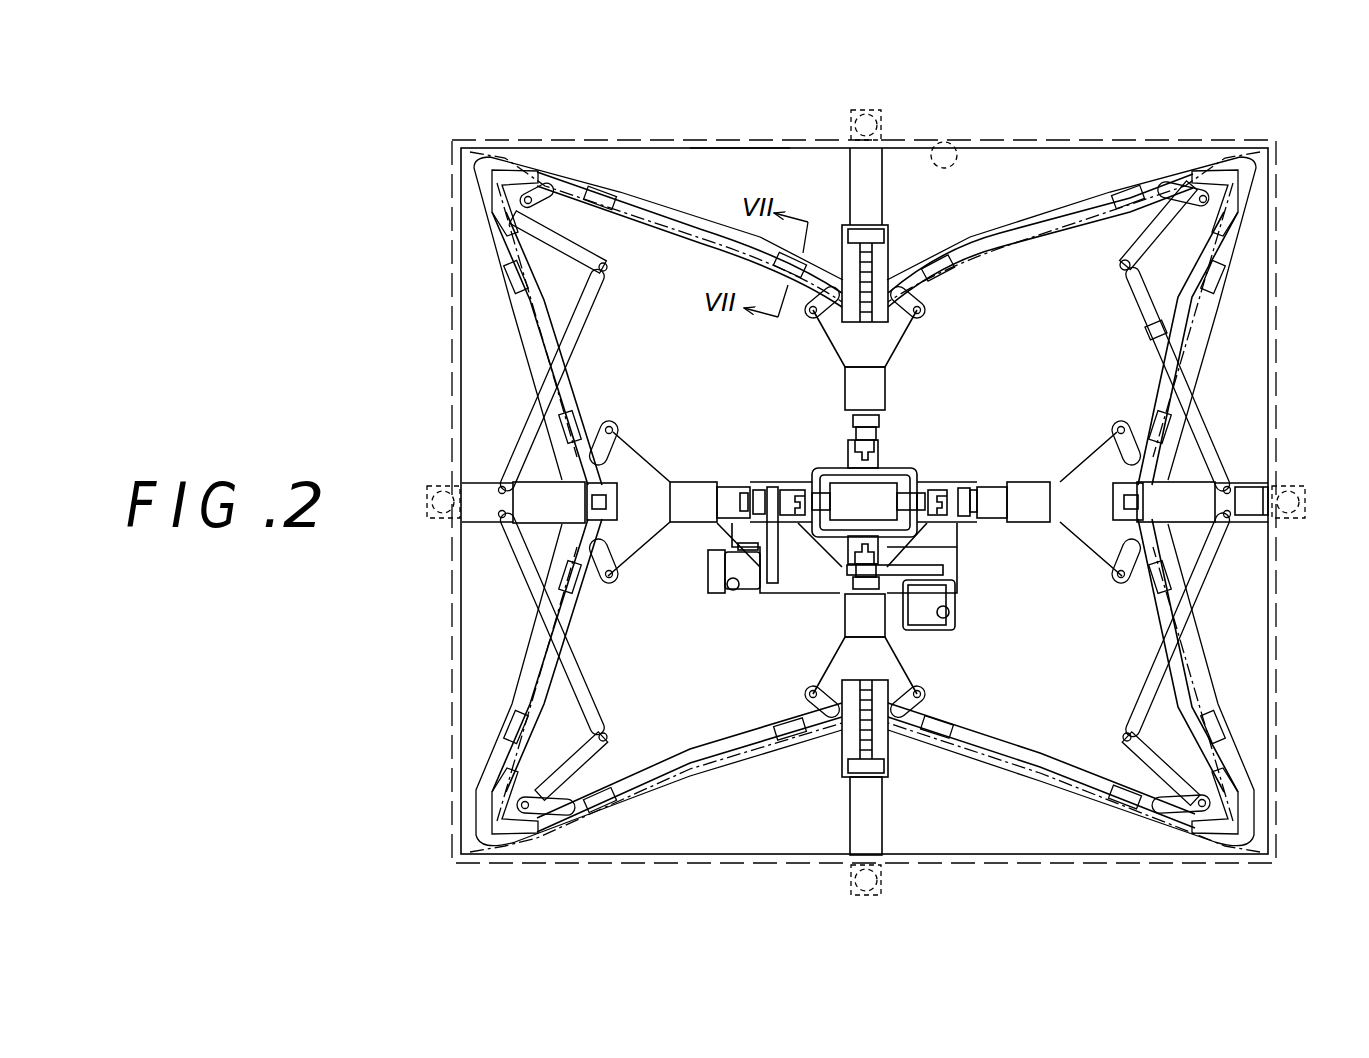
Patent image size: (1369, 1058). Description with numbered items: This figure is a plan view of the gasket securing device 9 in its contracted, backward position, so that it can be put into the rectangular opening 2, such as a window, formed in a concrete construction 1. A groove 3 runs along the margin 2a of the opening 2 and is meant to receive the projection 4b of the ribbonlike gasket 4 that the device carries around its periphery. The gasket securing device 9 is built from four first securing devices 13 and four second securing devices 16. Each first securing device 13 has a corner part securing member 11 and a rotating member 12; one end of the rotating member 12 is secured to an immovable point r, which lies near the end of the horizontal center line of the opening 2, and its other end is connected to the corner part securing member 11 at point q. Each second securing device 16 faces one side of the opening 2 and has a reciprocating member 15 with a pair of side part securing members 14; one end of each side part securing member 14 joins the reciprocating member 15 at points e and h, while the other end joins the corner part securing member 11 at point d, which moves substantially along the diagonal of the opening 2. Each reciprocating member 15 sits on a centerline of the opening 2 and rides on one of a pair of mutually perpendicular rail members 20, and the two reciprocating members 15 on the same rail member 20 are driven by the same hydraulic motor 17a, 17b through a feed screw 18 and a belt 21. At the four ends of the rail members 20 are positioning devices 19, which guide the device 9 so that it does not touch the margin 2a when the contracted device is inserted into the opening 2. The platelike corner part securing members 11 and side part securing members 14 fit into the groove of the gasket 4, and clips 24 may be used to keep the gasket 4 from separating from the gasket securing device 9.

The concrete construction 1 is at (1258, 121).
The opening 2 is at (1018, 160).
The margin of the opening 2a is at (712, 150).
The groove 3 is at (952, 148).
The gasket 4 is at (598, 186).
The projection of the gasket 4b is at (660, 205).
The gasket securing device 9 is at (1237, 415).
The corner part securing member 11 is at (1170, 240).
The rotating member 12 is at (1155, 332).
The first securing device 13 is at (1140, 307).
The side part securing member 14 is at (692, 245).
The reciprocating member 15 is at (695, 500).
The second securing device 16 is at (1000, 232).
The hydraulic motor 17a is at (745, 600).
The hydraulic motor 17b is at (935, 615).
The feed screw 18 is at (872, 268).
The positioning device 19 is at (856, 116).
The rail member 20 is at (890, 440).
The belt 21 is at (940, 570).
The clip 24 is at (1118, 185).
The point d is at (1205, 195).
The point e is at (1121, 425).
The point h is at (922, 312).
The point q is at (1119, 262).
The immovable point r is at (1227, 487).